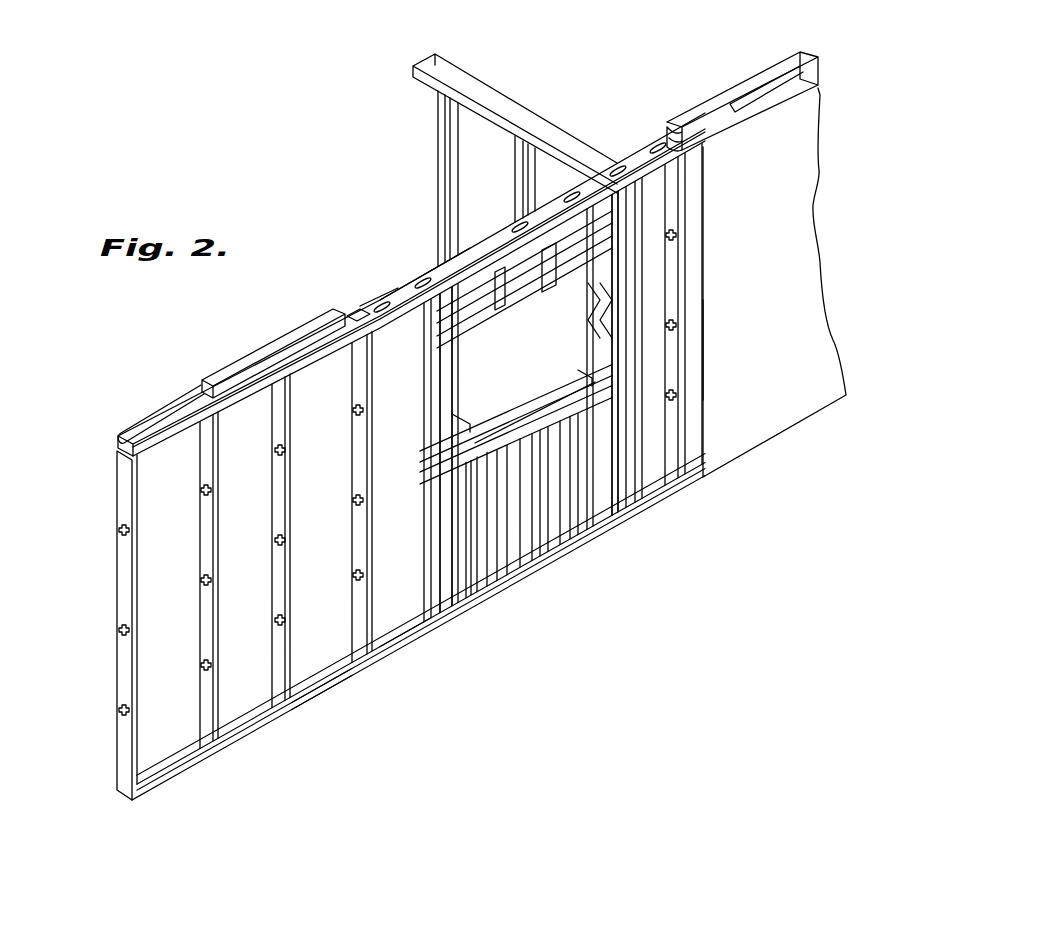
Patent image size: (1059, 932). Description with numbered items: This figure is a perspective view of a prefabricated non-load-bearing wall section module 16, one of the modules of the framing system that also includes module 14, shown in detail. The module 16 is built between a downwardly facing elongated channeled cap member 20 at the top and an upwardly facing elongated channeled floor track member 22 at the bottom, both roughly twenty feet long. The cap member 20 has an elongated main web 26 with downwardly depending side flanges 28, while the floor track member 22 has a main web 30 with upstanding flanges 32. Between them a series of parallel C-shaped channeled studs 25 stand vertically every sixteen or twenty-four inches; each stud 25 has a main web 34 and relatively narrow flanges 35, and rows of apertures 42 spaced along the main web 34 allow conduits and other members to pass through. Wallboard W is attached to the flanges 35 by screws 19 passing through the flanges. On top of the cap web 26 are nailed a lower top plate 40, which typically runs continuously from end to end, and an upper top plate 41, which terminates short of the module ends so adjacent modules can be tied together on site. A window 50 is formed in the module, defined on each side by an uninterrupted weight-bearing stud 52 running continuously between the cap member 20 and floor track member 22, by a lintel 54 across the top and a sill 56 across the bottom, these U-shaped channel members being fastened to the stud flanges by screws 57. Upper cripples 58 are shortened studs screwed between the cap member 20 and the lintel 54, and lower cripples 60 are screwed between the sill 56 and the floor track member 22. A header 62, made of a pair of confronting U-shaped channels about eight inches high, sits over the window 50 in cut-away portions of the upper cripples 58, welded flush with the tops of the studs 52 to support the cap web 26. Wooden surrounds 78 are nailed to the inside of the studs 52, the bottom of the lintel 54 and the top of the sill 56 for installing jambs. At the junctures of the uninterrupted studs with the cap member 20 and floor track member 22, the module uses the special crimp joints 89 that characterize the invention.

The non-load-bearing wall section module 14 is at (505, 110).
The wall section module 16 is at (105, 501).
The screws 19 is at (758, 220).
The cap member 20 is at (396, 286).
The floor track member 22 is at (401, 658).
The studs 25 is at (120, 585).
The main web 26 is at (405, 292).
The side flanges 28 is at (392, 309).
The main web 30 is at (407, 630).
The upstanding flanges 32 is at (335, 684).
The main web 34 is at (124, 548).
The flanges 35 is at (138, 540).
The lower top plate 40 is at (178, 408).
The upper top plate 41 is at (213, 382).
The apertures 42 is at (203, 667).
The window 50 is at (500, 381).
The uninterrupted weight-bearing stud 52 is at (437, 502).
The lintel 54 is at (546, 283).
The sill 56 is at (570, 400).
The screws 57 is at (440, 343).
The upper cripples 58 is at (541, 274).
The lower cripples 60 is at (467, 590).
The header 62 is at (484, 268).
The surrounds 78 is at (540, 330).
The crimp joints 89 is at (292, 345).
The wallboard W is at (798, 280).